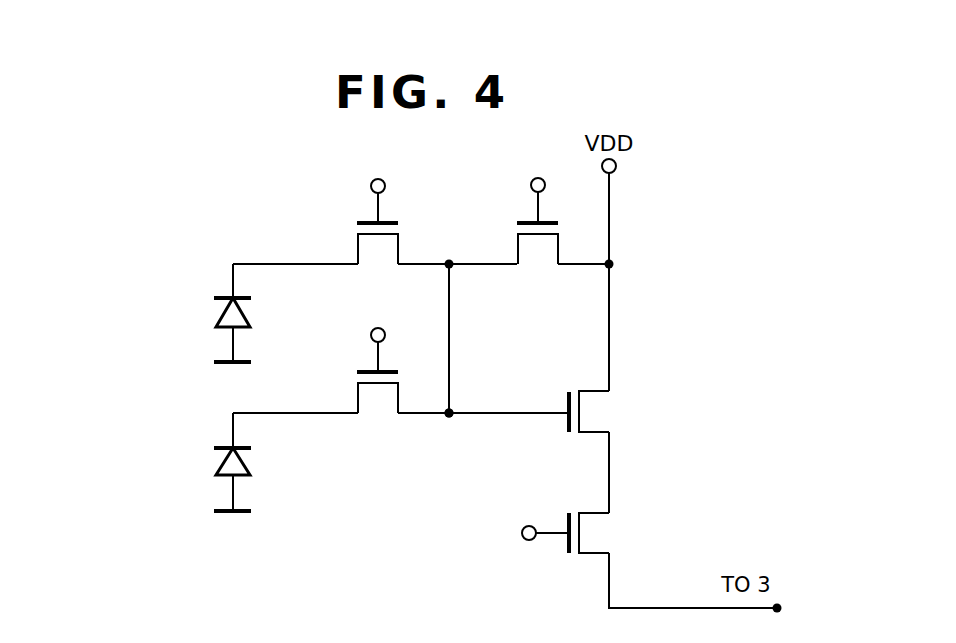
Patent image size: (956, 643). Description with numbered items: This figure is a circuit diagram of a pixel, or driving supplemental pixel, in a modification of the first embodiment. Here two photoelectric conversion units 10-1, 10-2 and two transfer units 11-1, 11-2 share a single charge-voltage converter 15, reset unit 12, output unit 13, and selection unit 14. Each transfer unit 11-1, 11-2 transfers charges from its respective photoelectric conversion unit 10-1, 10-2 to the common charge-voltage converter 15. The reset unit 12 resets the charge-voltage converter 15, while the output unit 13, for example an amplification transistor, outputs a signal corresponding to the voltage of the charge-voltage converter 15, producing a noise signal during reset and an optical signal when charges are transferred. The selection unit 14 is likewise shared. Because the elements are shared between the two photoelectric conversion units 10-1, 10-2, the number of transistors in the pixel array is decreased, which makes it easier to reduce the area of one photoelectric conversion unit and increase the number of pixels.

The photoelectric conversion unit 10-1 is at (218, 288).
The photoelectric conversion unit 10-2 is at (218, 438).
The transfer unit 11-1 is at (365, 220).
The transfer unit 11-2 is at (365, 365).
The reset unit 12 is at (525, 218).
The output unit 13 is at (575, 385).
The selection unit 14 is at (575, 507).
The charge-voltage converter 15 is at (447, 420).